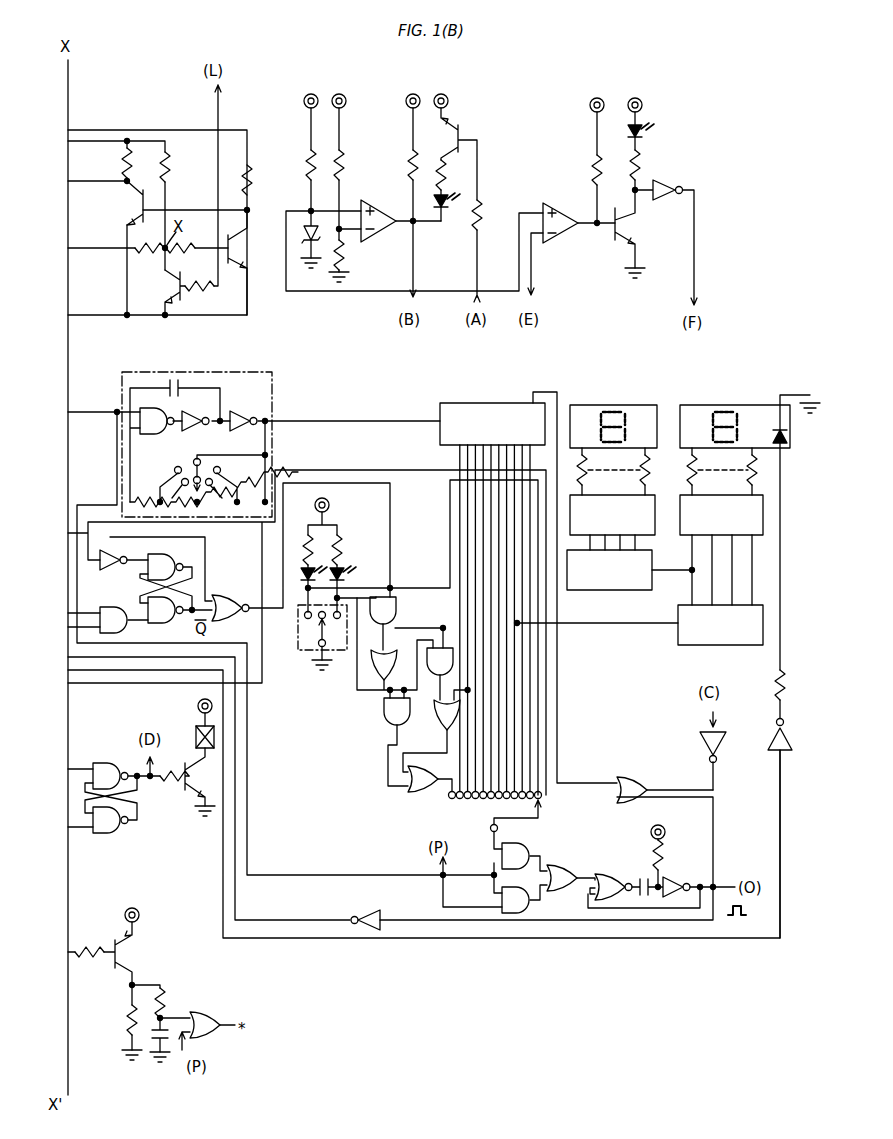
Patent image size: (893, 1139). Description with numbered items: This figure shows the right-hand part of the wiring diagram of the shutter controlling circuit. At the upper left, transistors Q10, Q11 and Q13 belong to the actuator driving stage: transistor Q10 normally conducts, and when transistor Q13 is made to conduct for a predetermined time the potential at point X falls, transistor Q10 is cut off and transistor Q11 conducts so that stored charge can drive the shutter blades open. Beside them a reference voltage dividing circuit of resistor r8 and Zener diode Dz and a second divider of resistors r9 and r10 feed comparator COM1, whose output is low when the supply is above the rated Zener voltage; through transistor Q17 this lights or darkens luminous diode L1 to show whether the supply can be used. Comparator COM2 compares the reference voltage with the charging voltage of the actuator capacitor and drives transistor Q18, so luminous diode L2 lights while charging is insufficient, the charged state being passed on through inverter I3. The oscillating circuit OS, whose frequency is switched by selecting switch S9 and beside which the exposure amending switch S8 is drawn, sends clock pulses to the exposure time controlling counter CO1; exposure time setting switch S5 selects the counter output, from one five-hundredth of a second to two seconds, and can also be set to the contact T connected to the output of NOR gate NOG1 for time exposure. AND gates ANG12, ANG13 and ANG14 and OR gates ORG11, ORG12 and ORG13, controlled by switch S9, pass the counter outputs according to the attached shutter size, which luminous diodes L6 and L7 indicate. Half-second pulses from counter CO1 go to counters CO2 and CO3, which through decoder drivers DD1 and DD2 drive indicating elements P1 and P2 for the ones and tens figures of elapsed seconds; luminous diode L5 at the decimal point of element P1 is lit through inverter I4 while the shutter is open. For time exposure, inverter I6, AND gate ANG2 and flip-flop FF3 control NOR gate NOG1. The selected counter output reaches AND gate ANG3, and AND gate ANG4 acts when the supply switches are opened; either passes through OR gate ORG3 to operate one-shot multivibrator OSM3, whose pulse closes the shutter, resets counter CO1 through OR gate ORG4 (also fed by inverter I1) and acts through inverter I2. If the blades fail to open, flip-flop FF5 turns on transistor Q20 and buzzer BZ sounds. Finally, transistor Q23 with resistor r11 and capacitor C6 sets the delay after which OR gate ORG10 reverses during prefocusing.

The transistor Q10 is at (246, 262).
The transistor Q11 is at (123, 203).
The transistor Q13 is at (175, 200).
The transistor Q17 is at (465, 205).
The transistor Q18 is at (632, 234).
The transistor Q20 is at (182, 783).
The transistor Q23 is at (116, 953).
The resistor r8 is at (300, 159).
The resistor r9 is at (347, 168).
The resistor r10 is at (348, 255).
The resistor r11 is at (159, 1020).
The Zener diode Dz is at (306, 234).
The comparator COM1 is at (376, 210).
The comparator COM2 is at (561, 210).
The luminous diode L1 is at (449, 197).
The luminous diode L2 is at (647, 151).
The luminous diode L5 is at (790, 448).
The luminous diode L6 is at (306, 573).
The luminous diode L7 is at (353, 573).
The inverter I1 is at (715, 751).
The inverter I2 is at (365, 911).
The inverter I3 is at (666, 233).
The inverter I4 is at (785, 804).
The inverter I6 is at (156, 569).
The oscillating circuit OS is at (272, 372).
The exposure amending switch S8 is at (214, 471).
The selecting switch S9 is at (312, 637).
The exposure time setting switch S5 is at (495, 807).
The terminal T is at (525, 809).
The exposure time controlling counter CO1 is at (495, 398).
The counter CO2 is at (720, 625).
The counter CO3 is at (631, 570).
The decoder driver DD1 is at (721, 515).
The decoder driver DD2 is at (612, 515).
The indicating element P1 is at (705, 405).
The indicating element P2 is at (597, 405).
The flip-flop circuit FF3 is at (176, 578).
The flip-flop circuit FF5 is at (109, 785).
The AND gate ANG2 is at (108, 611).
The AND gate ANG3 is at (517, 857).
The AND gate ANG4 is at (537, 905).
The AND gate ANG12 is at (408, 623).
The AND gate ANG13 is at (430, 662).
The AND gate ANG14 is at (395, 717).
The NOR gate NOG1 is at (229, 597).
The OR gate ORG3 is at (562, 873).
The OR gate ORG4 is at (546, 838).
The OR gate ORG10 is at (199, 1020).
The OR gate ORG11 is at (372, 668).
The OR gate ORG12 is at (440, 718).
The OR gate ORG13 is at (422, 792).
The one-shot multivibrator circuit OSM3 is at (661, 866).
The buzzer BZ is at (196, 730).
The capacitor C6 is at (158, 1037).